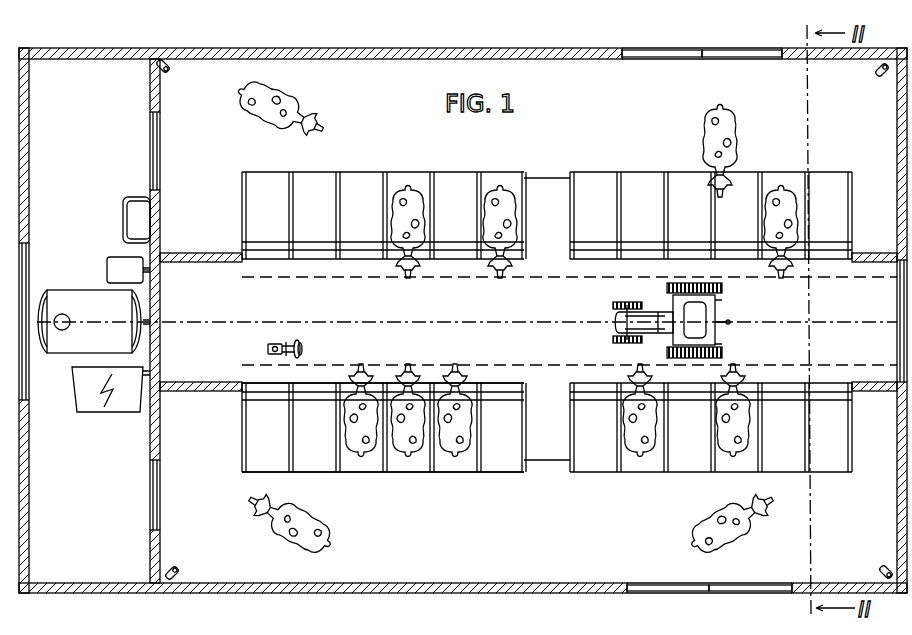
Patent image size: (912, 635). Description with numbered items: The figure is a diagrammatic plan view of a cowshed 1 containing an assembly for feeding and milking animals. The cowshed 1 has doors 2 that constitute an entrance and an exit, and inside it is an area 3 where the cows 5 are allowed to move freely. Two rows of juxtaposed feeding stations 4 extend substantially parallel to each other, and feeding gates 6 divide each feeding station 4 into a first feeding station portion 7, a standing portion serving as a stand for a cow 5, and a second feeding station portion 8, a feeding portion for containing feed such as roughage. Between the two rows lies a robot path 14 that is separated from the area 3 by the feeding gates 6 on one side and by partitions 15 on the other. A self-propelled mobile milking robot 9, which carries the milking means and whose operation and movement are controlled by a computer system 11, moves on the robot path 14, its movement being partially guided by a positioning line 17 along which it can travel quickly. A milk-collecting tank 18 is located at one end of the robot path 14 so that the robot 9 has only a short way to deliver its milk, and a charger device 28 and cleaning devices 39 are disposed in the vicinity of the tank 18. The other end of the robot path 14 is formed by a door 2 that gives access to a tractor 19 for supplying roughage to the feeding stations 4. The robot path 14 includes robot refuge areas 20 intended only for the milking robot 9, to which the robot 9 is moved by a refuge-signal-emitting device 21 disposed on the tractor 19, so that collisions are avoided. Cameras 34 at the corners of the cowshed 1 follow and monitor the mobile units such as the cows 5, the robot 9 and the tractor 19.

The cowshed 1 is at (245, 598).
The doors 2 is at (150, 112).
The area 3 is at (372, 112).
The feeding stations 4 is at (503, 455).
The cows 5 is at (360, 455).
The feeding gates 6 is at (250, 245).
The first feeding station portion 7 is at (264, 473).
The second feeding station portion 8 is at (272, 388).
The mobile milking robot 9 is at (276, 346).
The computer system 11 is at (135, 208).
The robot path 14 is at (450, 352).
The partitions 15 is at (197, 255).
The positioning line 17 is at (440, 277).
The milk-collecting tank 18 is at (72, 305).
The tractor 19 is at (625, 322).
The robot refuge area 20 is at (565, 219).
The refuge-signal-emitting device 21 is at (715, 310).
The charger device 28 is at (90, 398).
The cameras 34 is at (172, 72).
The cleaning devices 39 is at (110, 268).